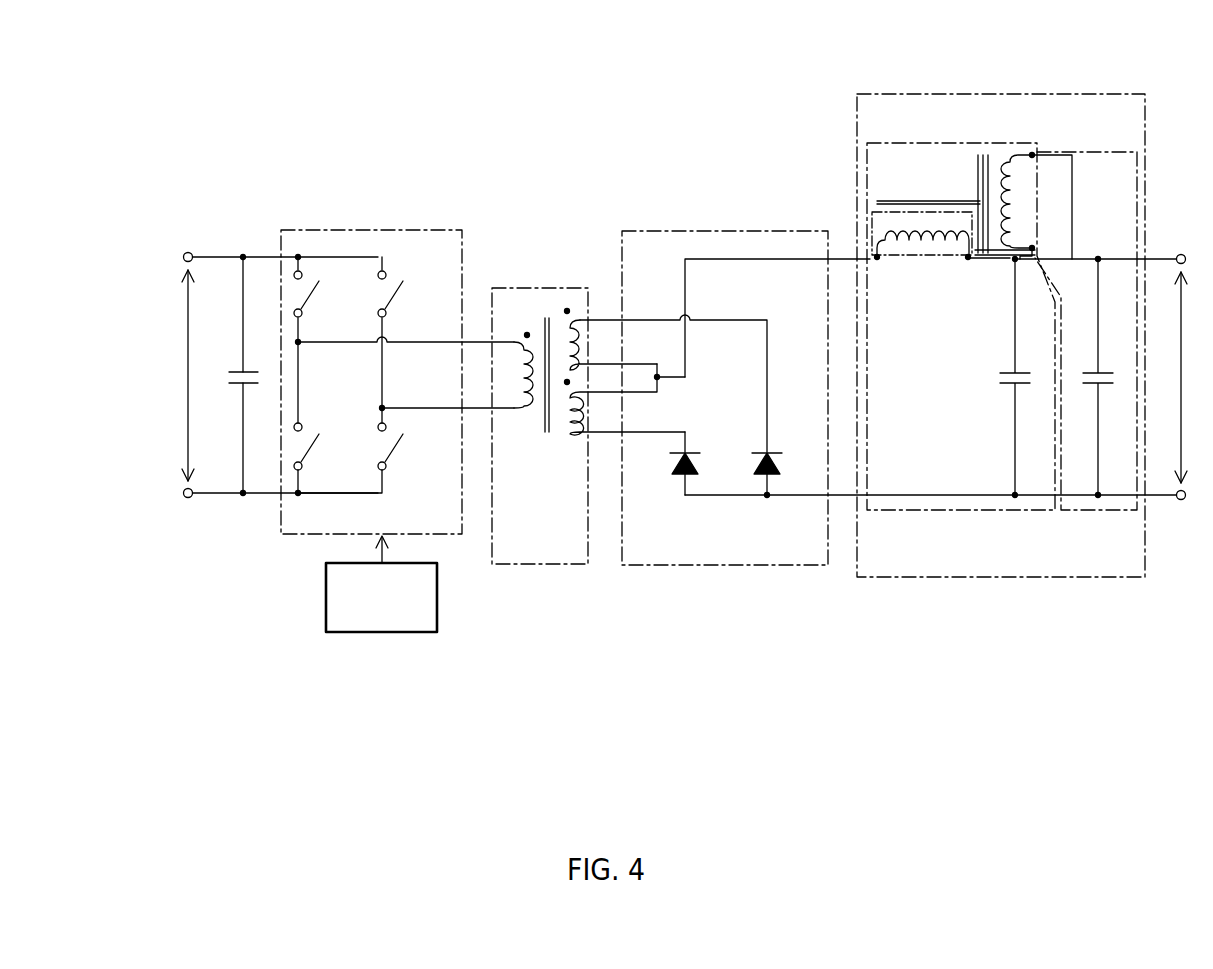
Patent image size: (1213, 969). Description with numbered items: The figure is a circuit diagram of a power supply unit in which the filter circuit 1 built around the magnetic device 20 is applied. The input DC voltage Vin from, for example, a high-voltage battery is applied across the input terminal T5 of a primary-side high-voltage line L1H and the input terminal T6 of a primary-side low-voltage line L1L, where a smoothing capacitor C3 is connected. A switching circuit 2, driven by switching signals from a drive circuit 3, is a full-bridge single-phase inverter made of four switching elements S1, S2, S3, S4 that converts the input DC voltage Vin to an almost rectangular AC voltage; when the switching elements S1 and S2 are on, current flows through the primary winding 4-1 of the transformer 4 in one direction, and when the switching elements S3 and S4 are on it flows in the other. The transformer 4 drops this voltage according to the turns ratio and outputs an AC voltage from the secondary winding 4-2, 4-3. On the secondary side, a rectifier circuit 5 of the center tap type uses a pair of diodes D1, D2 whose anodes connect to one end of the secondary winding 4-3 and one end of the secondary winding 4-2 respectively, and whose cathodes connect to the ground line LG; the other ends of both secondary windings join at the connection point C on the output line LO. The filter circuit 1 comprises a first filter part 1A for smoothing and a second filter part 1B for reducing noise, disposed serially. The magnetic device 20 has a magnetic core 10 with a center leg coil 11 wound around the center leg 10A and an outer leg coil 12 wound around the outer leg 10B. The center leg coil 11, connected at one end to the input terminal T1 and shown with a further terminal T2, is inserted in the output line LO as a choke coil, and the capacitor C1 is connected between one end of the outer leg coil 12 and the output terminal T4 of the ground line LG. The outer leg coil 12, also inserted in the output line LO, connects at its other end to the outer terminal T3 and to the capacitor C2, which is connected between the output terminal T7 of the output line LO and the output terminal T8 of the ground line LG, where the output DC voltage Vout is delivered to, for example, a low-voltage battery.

The filter circuit 1 is at (1099, 91).
The first filter part 1A is at (960, 513).
The second filter part 1B is at (1097, 513).
The switching circuit 2 is at (371, 227).
The drive circuit 3 is at (439, 598).
The transformer 4 is at (510, 286).
The primary winding 4-1 is at (521, 420).
The secondary winding 4-2 is at (570, 302).
The secondary winding 4-3 is at (562, 455).
The rectifier circuit 5 is at (727, 229).
The magnetic core 10 is at (990, 44).
The center leg 10A is at (913, 192).
The outer leg 10B is at (970, 162).
The center leg coil 11 is at (927, 252).
The outer leg coil 12 is at (1028, 184).
The magnetic device 20 is at (992, 142).
The input terminal T1 is at (881, 262).
The terminal T2 is at (966, 262).
The outer terminal T3 is at (1036, 256).
The output terminal T4 is at (1034, 154).
The input terminal T5 is at (187, 252).
The input terminal T6 is at (187, 499).
The output terminal T7 is at (1180, 254).
The output terminal T8 is at (1180, 501).
The connection point C is at (659, 380).
The capacitor C1 is at (1021, 387).
The capacitor C2 is at (1104, 387).
The smoothing capacitor C3 is at (258, 372).
The diode D1 is at (672, 465).
The diode D2 is at (796, 474).
The switching element S1 is at (330, 292).
The switching element S2 is at (414, 444).
The switching element S3 is at (414, 292).
The switching element S4 is at (330, 444).
The output line LO is at (683, 287).
The ground line LG is at (719, 499).
The primary-side high-voltage line L1H is at (232, 252).
The primary-side low-voltage line L1L is at (232, 499).
The input DC voltage Vin is at (187, 375).
The output DC voltage Vout is at (1181, 377).